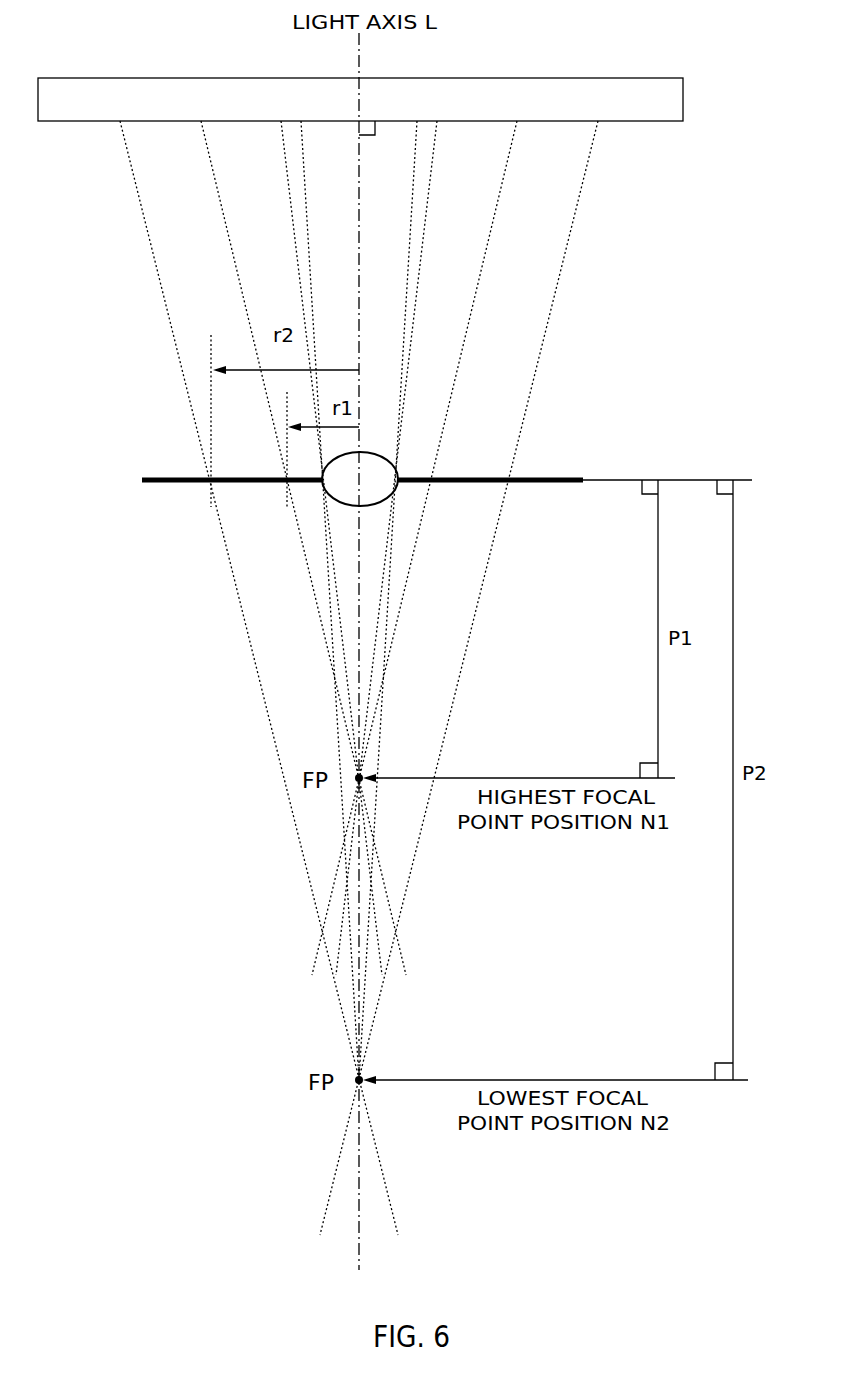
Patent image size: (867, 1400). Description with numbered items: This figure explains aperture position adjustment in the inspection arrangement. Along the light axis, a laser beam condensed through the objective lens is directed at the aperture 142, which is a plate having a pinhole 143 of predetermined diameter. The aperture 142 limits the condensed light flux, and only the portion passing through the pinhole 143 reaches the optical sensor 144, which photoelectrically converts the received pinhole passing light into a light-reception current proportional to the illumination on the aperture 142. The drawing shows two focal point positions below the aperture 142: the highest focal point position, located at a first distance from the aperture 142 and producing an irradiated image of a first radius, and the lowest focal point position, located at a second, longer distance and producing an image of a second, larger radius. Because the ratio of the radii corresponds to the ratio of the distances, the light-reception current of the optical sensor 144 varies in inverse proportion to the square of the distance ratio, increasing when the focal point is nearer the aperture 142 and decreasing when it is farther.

The aperture 142 is at (583, 480).
The pinhole 143 is at (380, 448).
The optical sensor 144 is at (684, 97).